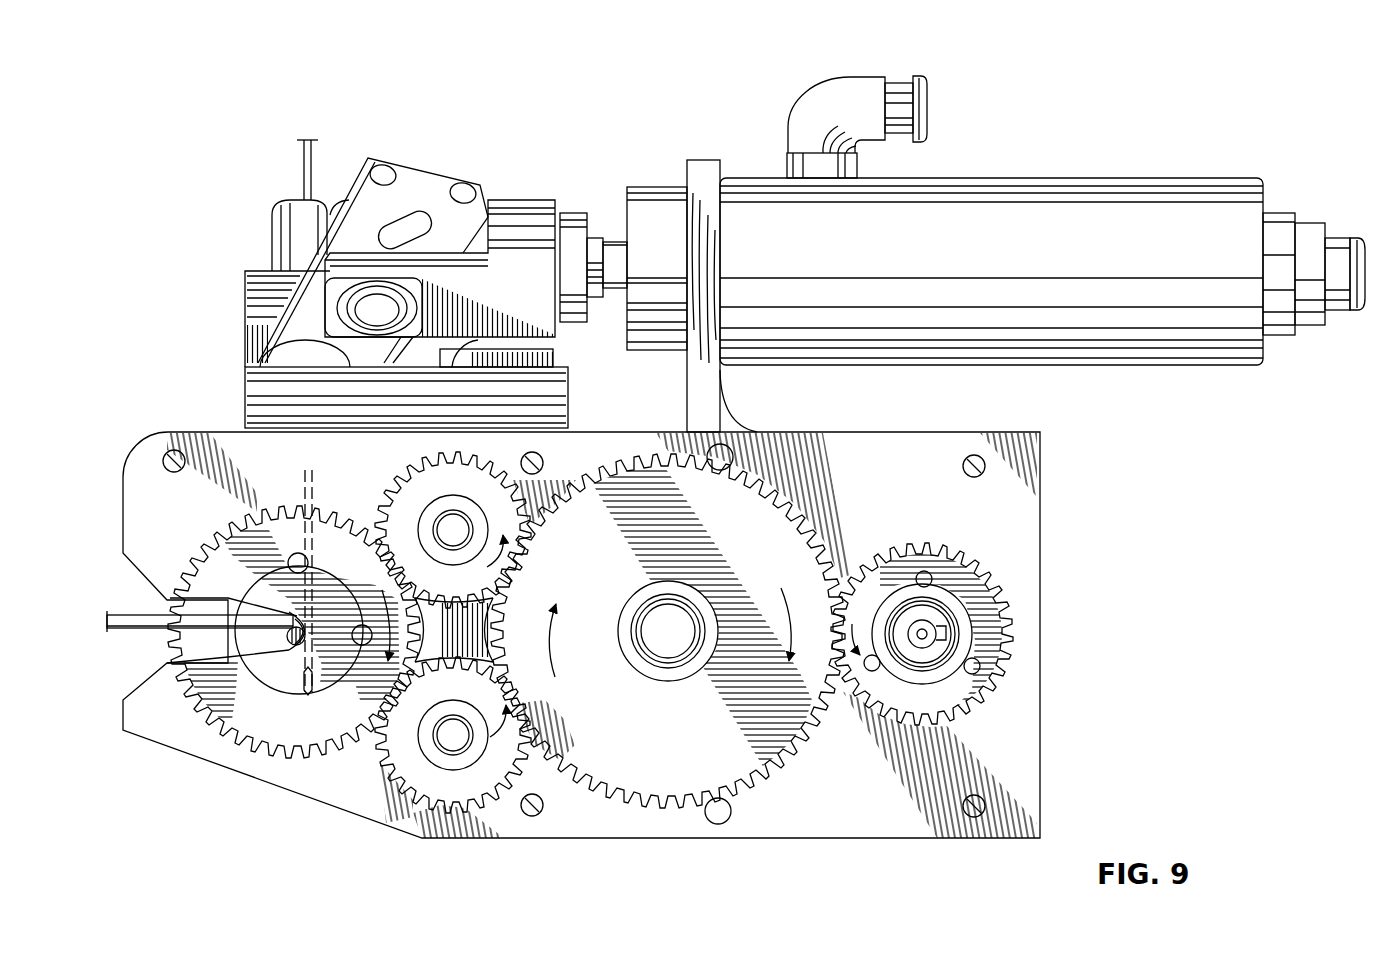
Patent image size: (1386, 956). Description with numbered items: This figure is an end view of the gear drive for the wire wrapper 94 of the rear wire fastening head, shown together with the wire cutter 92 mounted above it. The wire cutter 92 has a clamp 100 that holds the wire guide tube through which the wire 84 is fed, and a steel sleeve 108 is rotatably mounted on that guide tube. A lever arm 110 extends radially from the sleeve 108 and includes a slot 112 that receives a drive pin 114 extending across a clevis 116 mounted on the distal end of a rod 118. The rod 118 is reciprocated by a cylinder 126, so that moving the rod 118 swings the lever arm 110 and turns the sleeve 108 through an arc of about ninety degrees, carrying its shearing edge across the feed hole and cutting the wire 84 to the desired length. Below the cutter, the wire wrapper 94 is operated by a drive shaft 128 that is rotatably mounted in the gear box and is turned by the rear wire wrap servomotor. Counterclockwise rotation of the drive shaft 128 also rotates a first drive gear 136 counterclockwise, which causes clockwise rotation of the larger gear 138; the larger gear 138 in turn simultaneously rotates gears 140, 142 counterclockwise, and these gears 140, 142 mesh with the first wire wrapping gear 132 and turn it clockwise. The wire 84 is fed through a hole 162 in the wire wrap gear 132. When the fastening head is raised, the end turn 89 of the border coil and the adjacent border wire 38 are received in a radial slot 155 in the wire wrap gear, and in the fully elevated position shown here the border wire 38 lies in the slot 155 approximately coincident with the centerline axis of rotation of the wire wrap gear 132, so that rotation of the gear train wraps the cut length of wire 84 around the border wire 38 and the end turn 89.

The wire cutter 92 is at (148, 157).
The wire 84 is at (304, 170).
The slot 112 is at (408, 215).
The lever arm 110 is at (433, 175).
The drive pin 114 is at (377, 237).
The clevis 116 is at (530, 208).
The rod 118 is at (612, 256).
The cylinder 126 is at (1064, 180).
The sleeve 108 is at (290, 352).
The clamp 100 is at (568, 402).
The gear 140 is at (402, 497).
The end turn 89 is at (107, 612).
The radial slot 155 is at (227, 657).
The rear border wire 38 is at (291, 645).
The first wire wrapping gear 132 is at (314, 733).
The hole 162 is at (313, 684).
The gear 142 is at (428, 777).
The larger gear 138 is at (682, 761).
The drive shaft 128 is at (928, 630).
The wire wrapper 94 is at (1046, 579).
The first drive gear 136 is at (1008, 676).